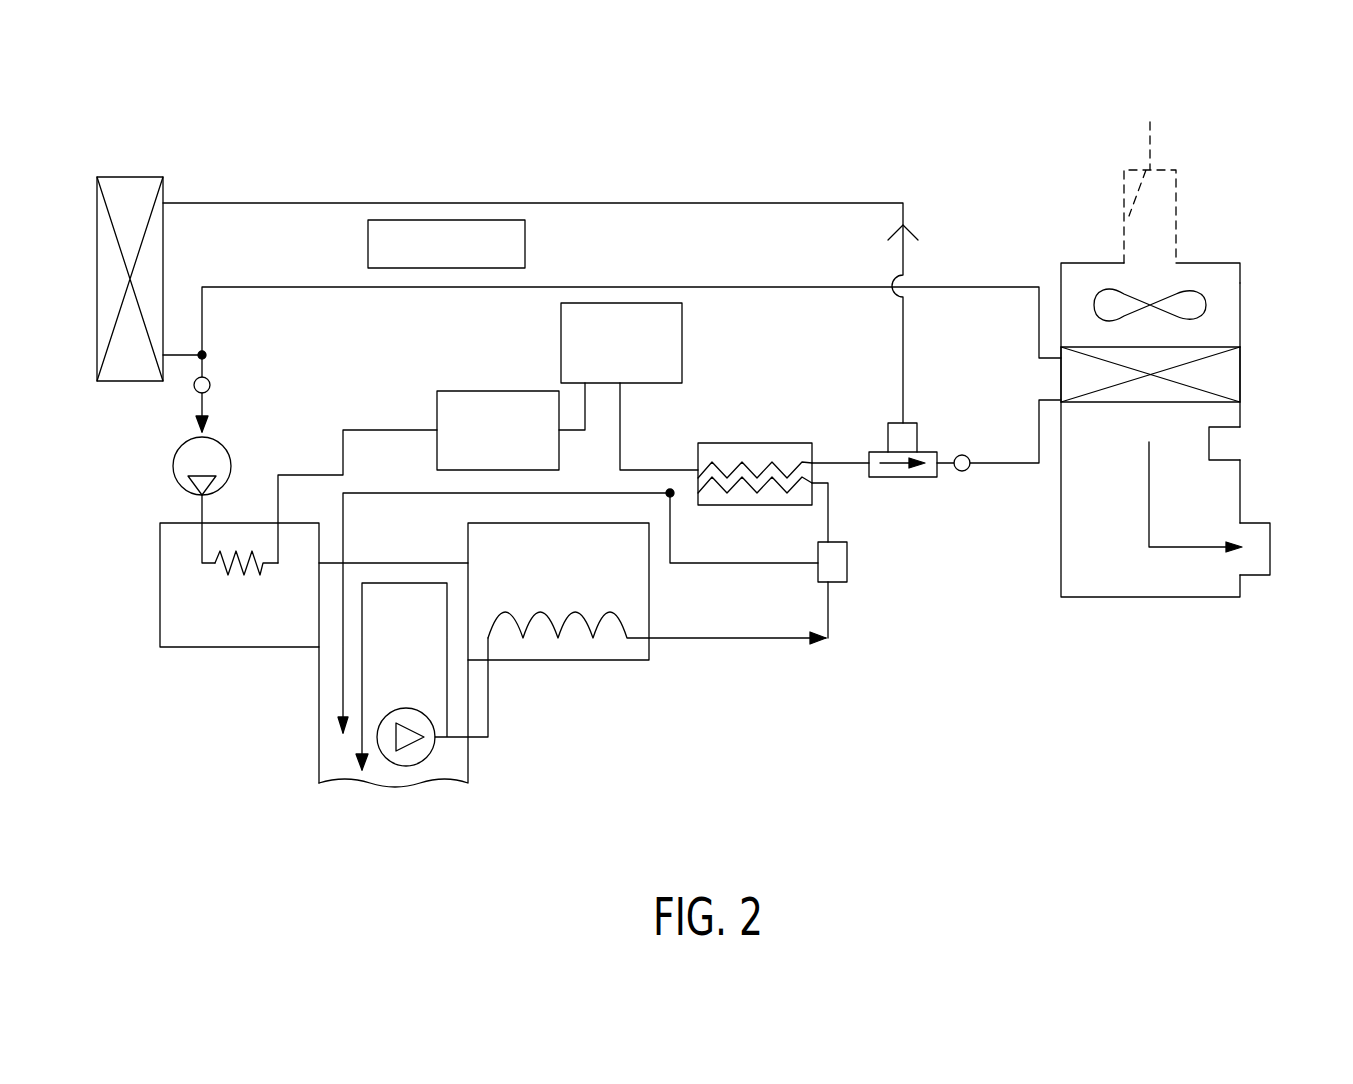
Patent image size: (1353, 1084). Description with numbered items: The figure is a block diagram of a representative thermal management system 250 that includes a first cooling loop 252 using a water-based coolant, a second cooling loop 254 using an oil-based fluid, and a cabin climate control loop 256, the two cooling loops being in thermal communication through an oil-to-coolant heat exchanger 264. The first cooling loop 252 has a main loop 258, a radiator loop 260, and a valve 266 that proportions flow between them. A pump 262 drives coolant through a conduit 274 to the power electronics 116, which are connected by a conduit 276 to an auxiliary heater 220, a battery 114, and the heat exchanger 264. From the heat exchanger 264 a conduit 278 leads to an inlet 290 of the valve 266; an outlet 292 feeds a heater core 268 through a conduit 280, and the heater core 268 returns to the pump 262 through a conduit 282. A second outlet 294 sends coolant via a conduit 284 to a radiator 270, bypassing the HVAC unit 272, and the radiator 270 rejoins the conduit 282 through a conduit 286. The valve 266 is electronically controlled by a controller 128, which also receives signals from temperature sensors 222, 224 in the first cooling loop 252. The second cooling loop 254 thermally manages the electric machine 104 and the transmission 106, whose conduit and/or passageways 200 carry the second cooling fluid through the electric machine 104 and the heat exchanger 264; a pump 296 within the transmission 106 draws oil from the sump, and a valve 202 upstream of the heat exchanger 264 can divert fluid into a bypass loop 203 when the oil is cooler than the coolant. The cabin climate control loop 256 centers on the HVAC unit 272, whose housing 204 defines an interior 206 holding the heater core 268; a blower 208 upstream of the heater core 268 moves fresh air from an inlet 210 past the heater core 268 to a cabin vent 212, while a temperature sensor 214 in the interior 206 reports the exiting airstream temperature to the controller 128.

The wound rotor synchronous machine 104 is at (620, 660).
The transmission 106 is at (460, 783).
The battery 114 is at (683, 343).
The power electronics 116 is at (160, 597).
The controller 128 is at (428, 220).
The conduit and/or passageways 200 is at (500, 630).
The valve 202 is at (850, 580).
The bypass loop 203 is at (718, 565).
The housing 204 is at (1240, 498).
The interior 206 is at (1118, 583).
The blower 208 is at (1107, 290).
The fresh air inlet 210 is at (1150, 177).
The cabin vent 212 is at (1253, 585).
The temperature sensor 214 is at (1228, 445).
The auxiliary heater 220 is at (495, 391).
The temperature sensor 222 is at (968, 470).
The temperature sensor 224 is at (212, 383).
The thermal management system 250 is at (703, 147).
The first cooling loop 252 is at (965, 250).
The second cooling loop 254 is at (740, 660).
The cabin climate control loop 256 is at (1198, 240).
The main loop 258 is at (316, 466).
The radiator loop 260 is at (823, 178).
The pump 262 is at (172, 465).
The heat exchanger 264 is at (727, 443).
The valve 266 is at (917, 445).
The heater core 268 is at (1240, 375).
The radiator 270 is at (135, 177).
The HVAC unit 272 is at (1240, 283).
The conduit 274 is at (202, 515).
The conduit 276 is at (385, 430).
The conduit 278 is at (830, 458).
The conduit 280 is at (1039, 410).
The conduit 282 is at (675, 287).
The conduit 284 is at (500, 202).
The conduit 286 is at (172, 355).
The inlet 290 is at (858, 478).
The outlet 292 is at (935, 478).
The second outlet 294 is at (880, 423).
The pump 296 is at (406, 766).